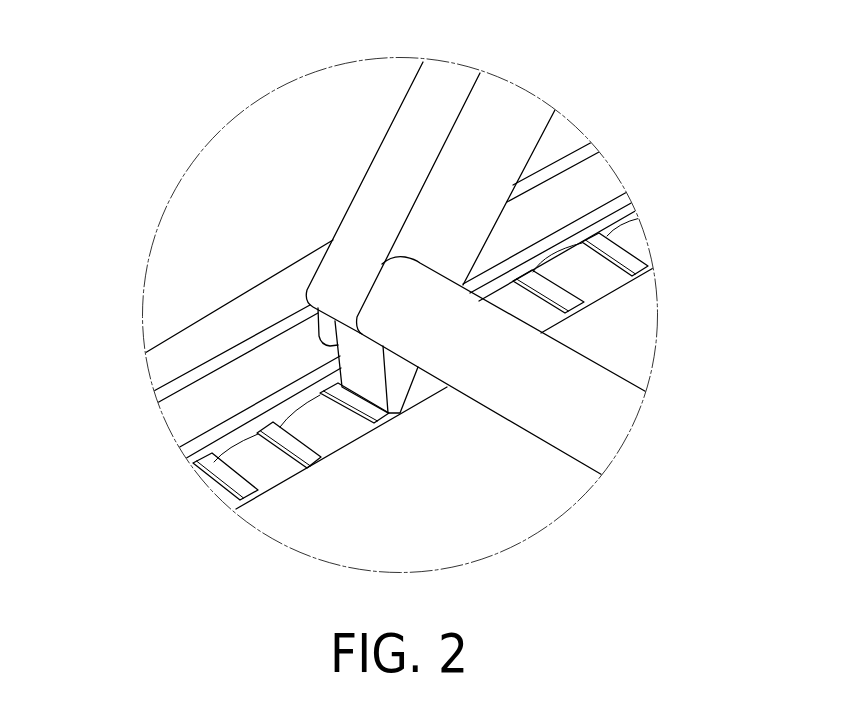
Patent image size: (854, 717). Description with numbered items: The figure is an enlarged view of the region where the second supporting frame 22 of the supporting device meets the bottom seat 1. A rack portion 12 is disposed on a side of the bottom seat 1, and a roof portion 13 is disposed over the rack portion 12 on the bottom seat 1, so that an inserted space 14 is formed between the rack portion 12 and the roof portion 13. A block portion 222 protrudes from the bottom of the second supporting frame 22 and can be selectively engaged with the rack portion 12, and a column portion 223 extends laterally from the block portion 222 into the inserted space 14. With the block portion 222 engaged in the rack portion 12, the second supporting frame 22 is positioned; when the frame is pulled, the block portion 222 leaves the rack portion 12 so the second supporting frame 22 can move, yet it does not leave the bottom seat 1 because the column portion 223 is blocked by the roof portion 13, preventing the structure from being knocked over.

The bottom seat 1 is at (317, 537).
The rack portion 12 is at (307, 423).
The roof portion 13 is at (182, 383).
The inserted space 14 is at (182, 420).
The second supporting frame 22 is at (433, 85).
The block portion 222 is at (370, 377).
The column portion 223 is at (330, 337).